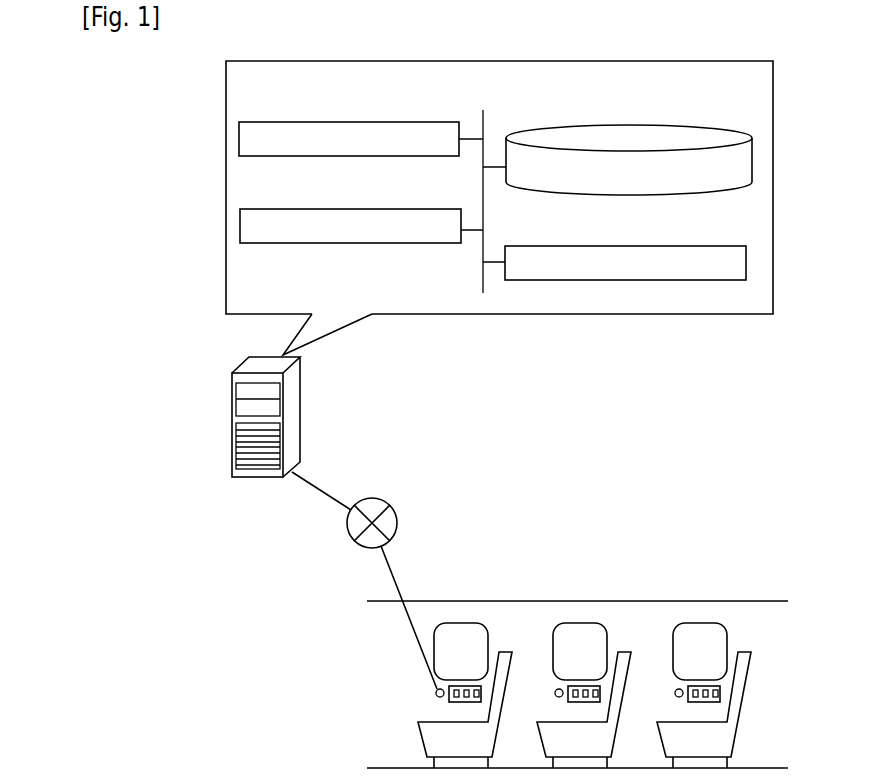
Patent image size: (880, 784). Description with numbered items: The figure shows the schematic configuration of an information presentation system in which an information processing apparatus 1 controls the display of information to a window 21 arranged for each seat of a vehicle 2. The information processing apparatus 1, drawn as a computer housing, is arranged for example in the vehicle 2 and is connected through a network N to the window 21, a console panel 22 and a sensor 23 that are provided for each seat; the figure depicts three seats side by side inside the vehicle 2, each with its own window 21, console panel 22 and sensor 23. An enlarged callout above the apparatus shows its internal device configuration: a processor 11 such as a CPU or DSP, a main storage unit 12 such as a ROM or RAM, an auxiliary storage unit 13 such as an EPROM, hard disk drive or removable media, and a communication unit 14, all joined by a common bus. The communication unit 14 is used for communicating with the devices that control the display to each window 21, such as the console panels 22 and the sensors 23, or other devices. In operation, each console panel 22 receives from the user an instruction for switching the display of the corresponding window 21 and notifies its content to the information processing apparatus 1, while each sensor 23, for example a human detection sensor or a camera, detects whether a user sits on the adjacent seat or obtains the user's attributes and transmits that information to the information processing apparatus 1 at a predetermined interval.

The information processing apparatus 1 is at (233, 372).
The processor 11 is at (331, 121).
The main storage unit 12 is at (331, 208).
The auxiliary storage unit 13 is at (534, 127).
The communication unit 14 is at (534, 246).
The network N is at (375, 497).
The vehicle 2 is at (642, 601).
The window 21 is at (458, 627).
The console panel 22 is at (460, 703).
The sensor 23 is at (435, 693).